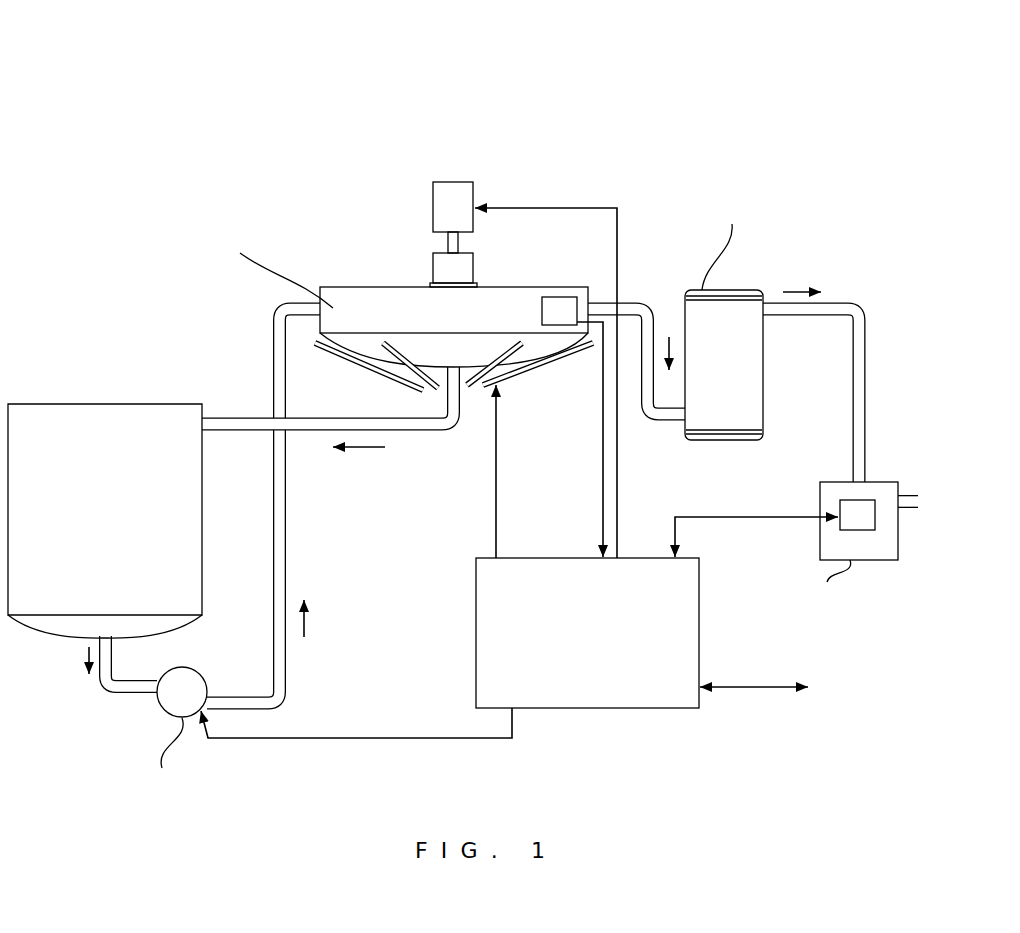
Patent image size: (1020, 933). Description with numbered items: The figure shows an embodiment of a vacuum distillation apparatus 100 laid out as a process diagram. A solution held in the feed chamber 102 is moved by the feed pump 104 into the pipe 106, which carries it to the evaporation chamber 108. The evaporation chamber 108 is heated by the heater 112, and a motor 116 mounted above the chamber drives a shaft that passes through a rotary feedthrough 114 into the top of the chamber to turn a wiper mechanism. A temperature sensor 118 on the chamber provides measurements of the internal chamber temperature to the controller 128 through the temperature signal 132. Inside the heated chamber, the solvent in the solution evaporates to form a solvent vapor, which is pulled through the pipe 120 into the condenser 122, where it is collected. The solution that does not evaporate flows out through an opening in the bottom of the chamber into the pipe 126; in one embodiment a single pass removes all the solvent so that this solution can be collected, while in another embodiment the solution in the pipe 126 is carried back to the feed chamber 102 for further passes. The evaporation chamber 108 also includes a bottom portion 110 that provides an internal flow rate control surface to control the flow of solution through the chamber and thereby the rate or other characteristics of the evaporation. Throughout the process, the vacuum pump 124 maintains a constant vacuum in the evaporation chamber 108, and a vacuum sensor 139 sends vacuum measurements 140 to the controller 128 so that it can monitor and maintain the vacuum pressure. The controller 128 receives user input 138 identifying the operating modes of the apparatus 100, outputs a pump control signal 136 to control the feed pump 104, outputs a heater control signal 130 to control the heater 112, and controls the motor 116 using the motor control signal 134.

The vacuum distillation apparatus 100 is at (86, 82).
The feed chamber 102 is at (52, 404).
The feed pump 104 is at (172, 714).
The pipe 106 is at (273, 358).
The evaporation chamber 108 is at (340, 305).
The bottom portion 110 is at (368, 343).
The heater 112 is at (548, 365).
The rotary feedthrough 114 is at (433, 262).
The motor 116 is at (433, 205).
The temperature sensor 118 is at (560, 297).
The pipe 120 is at (647, 305).
The condenser 122 is at (735, 290).
The vacuum pump 124 is at (828, 482).
The pipe 126 is at (460, 415).
The controller 128 is at (476, 588).
The heater control signal 130 is at (496, 522).
The temperature signal 132 is at (603, 498).
The motor control signal 134 is at (617, 498).
The pump control signal 136 is at (397, 735).
The user input 138 is at (770, 687).
The vacuum sensor 139 is at (840, 506).
The vacuum measurements 140 is at (745, 517).